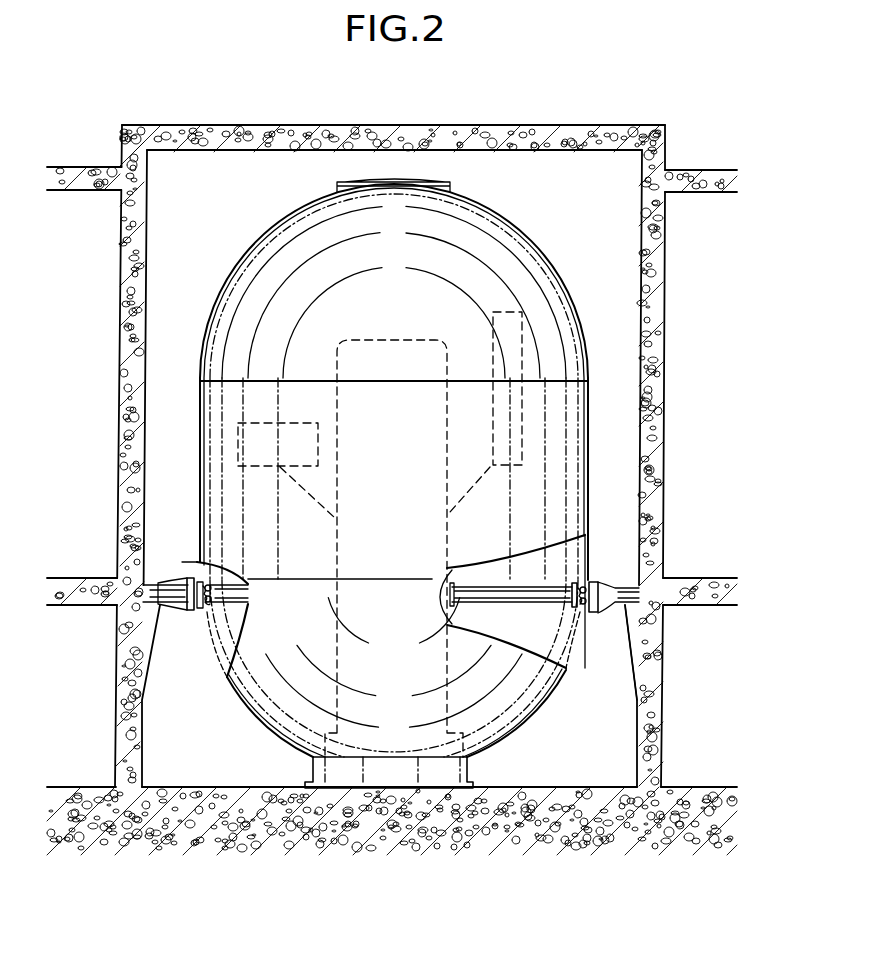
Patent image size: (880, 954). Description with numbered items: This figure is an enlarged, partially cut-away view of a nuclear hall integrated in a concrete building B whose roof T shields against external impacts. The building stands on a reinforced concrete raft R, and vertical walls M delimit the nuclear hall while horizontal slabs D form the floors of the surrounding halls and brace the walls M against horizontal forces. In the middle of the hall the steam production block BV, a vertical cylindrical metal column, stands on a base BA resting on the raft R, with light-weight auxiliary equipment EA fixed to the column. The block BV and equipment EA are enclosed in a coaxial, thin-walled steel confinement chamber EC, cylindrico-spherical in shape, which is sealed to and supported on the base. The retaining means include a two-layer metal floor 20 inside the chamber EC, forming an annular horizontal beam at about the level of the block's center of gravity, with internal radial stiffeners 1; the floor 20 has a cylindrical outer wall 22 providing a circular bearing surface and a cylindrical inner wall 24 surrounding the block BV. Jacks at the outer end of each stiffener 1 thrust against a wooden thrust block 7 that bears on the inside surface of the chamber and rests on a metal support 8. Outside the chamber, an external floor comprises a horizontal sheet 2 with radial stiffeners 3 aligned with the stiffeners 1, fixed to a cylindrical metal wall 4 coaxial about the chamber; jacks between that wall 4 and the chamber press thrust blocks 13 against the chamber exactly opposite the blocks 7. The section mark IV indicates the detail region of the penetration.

The internal radial stiffeners 1 is at (235, 588).
The horizontal sheet 2 is at (158, 605).
The radial stiffeners 3 is at (155, 580).
The cylindrical metal wall 4 is at (187, 608).
The thrust block 7 is at (213, 607).
The metal support 8 is at (577, 612).
The thrust block 13 is at (193, 557).
The two-layer metal floor 20 is at (500, 585).
The cylindrical outer wall 22 is at (563, 590).
The cylindrical inner wall 24 is at (452, 597).
The roof T is at (566, 126).
The concrete building B is at (623, 127).
The horizontal slabs D is at (690, 580).
The raft R is at (200, 797).
The vertical walls M is at (638, 710).
The confinement chamber EC is at (543, 252).
The auxiliary equipment EA is at (285, 423).
The steam production block BV is at (323, 392).
The base BA is at (313, 768).
The section IV is at (182, 575).